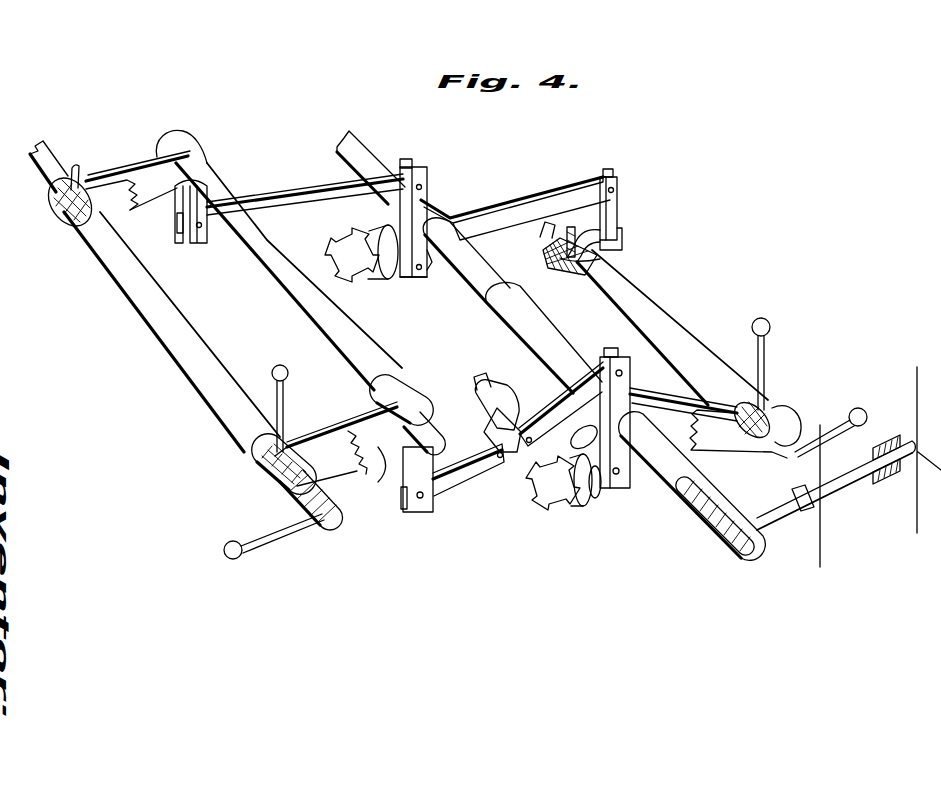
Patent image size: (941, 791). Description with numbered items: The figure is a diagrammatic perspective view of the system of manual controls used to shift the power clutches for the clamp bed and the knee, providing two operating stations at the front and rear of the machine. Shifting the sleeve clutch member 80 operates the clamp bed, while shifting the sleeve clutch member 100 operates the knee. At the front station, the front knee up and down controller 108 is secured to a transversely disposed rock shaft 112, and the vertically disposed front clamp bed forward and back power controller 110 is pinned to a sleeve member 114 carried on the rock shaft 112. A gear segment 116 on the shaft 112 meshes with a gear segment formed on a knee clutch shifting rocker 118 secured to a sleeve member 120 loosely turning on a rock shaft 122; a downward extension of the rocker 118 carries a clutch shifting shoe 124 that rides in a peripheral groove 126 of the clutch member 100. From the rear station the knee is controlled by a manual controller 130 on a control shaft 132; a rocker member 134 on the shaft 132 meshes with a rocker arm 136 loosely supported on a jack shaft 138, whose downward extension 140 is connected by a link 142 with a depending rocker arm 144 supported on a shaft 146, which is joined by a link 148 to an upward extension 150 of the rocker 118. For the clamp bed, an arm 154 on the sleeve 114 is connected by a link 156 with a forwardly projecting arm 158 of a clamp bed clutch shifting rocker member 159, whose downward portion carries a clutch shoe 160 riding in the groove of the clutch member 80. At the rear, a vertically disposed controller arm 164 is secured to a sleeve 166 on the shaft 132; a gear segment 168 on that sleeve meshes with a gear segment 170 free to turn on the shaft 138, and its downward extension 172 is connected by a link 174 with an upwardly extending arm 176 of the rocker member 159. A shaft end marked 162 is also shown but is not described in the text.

The sleeve clutch member 80 is at (346, 228).
The sleeve clutch member 100 is at (578, 500).
The front knee up and down controller 108 is at (860, 407).
The front clamp bed forward and back power controller 110 is at (771, 330).
The rock shaft 112 is at (550, 234).
The sleeve member 114 is at (645, 306).
The gear segment 116 is at (714, 420).
The knee clutch shifting rocker 118 is at (676, 416).
The sleeve member 120 is at (512, 321).
The rock shaft 122 is at (362, 157).
The clutch shifting shoe 124 is at (598, 490).
The peripheral groove 126 is at (577, 427).
The manual controller 130 is at (257, 537).
The control shaft 132 is at (334, 527).
The rocker member 134 is at (318, 440).
The rocker arm 136 is at (381, 452).
The jack shaft 138 is at (300, 308).
The downward extension 140 is at (412, 513).
The link 142 is at (468, 486).
The depending rocker arm 144 is at (513, 455).
The shaft 146 is at (476, 390).
The link 148 is at (537, 425).
The upward extension 150 is at (625, 374).
The arm 154 is at (612, 257).
The link 156 is at (612, 208).
The forwardly projecting arm 158 is at (493, 217).
The clamp bed clutch shifting rocker member 159 is at (423, 257).
The clutch shoe 160 is at (397, 270).
The rod 162 is at (37, 161).
The controller arm 164 is at (273, 369).
The sleeve 166 is at (152, 321).
The gear segment 168 is at (101, 177).
The gear segment 170 is at (148, 176).
The downward extension 172 is at (198, 243).
The link 174 is at (260, 210).
The upwardly extending arm 176 is at (426, 195).